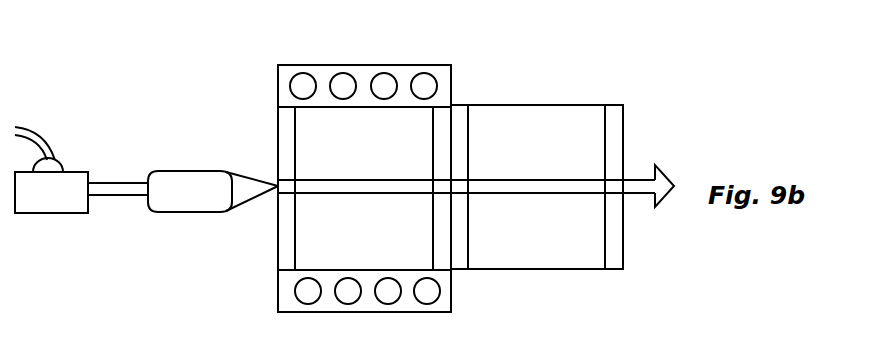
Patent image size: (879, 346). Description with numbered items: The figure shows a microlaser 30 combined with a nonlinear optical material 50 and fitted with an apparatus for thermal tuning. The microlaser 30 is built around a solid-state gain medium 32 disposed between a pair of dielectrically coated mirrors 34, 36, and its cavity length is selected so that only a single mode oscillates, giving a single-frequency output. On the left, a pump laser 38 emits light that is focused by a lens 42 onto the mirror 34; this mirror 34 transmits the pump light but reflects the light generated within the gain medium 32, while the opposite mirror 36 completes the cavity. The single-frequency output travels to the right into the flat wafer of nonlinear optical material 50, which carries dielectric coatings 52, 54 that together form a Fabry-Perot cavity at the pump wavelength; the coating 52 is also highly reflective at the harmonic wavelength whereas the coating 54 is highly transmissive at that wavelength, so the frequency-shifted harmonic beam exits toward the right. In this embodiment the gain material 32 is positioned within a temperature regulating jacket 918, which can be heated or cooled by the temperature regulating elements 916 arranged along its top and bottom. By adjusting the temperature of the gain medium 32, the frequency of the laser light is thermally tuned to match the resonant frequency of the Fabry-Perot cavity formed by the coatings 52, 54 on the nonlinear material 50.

The microchip laser 30 is at (266, 259).
The gain medium 32 is at (412, 138).
The mirror 34 is at (283, 127).
The mirror 36 is at (442, 262).
The pump laser 38 is at (58, 207).
The lens 42 is at (185, 207).
The nonlinear optical wafer 50 is at (558, 113).
The dielectric coating 52 is at (460, 238).
The dielectric coating 54 is at (615, 263).
The temperature regulating elements 916 is at (303, 82).
The temperature regulating jacket 918 is at (402, 66).